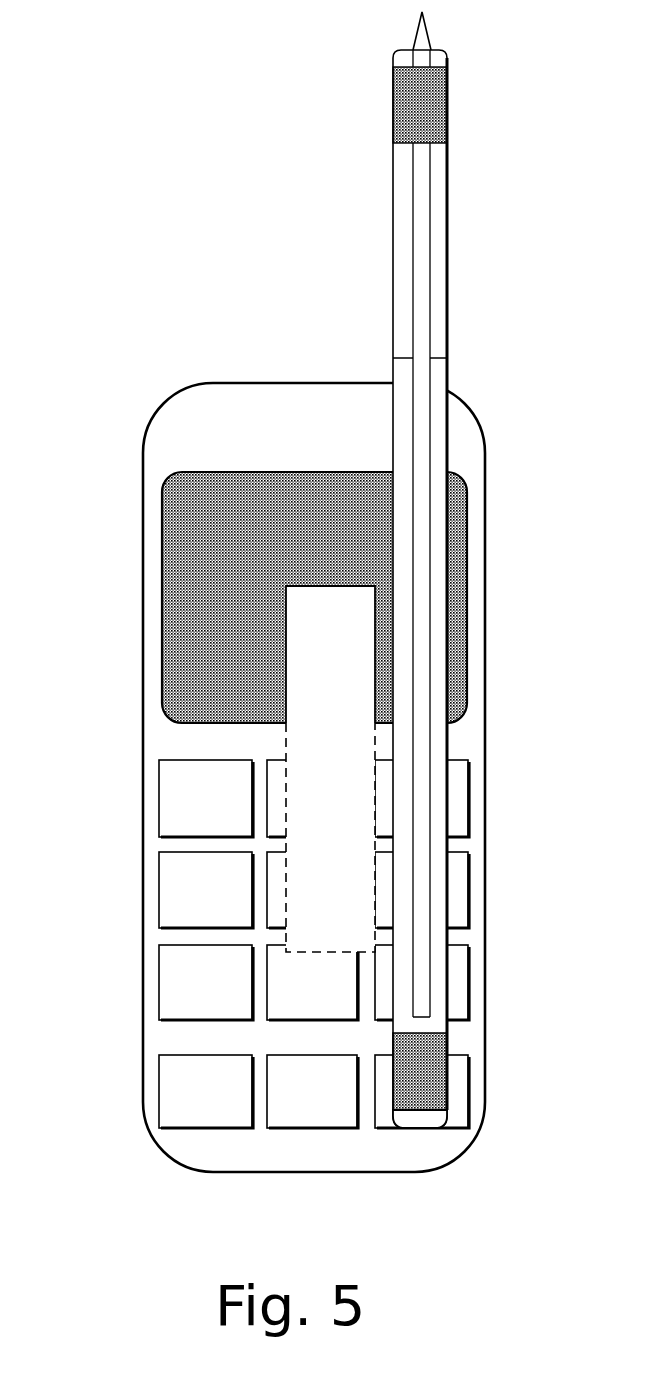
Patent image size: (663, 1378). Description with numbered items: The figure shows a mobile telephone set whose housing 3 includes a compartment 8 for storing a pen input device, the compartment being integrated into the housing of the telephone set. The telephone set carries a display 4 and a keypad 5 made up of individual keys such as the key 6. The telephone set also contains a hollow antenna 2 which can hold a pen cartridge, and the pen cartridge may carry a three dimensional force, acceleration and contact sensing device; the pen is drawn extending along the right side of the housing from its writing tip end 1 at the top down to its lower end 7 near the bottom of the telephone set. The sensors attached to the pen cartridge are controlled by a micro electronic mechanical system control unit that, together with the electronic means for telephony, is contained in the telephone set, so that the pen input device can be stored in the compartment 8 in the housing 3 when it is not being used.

The pen cap / writing tip end 1 is at (447, 95).
The pen body 2 is at (447, 232).
The phone housing 3 is at (427, 402).
The display 4 is at (465, 590).
The keypad 5 is at (450, 746).
The key 6 is at (157, 997).
The pen end / retainer 7 is at (440, 1090).
The slot 8 is at (286, 740).